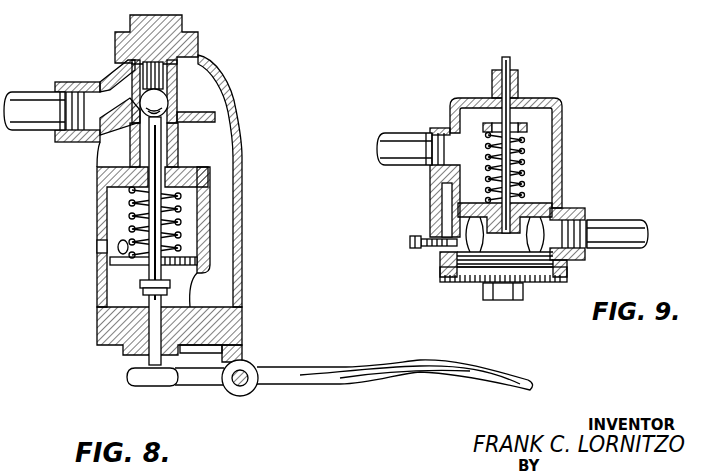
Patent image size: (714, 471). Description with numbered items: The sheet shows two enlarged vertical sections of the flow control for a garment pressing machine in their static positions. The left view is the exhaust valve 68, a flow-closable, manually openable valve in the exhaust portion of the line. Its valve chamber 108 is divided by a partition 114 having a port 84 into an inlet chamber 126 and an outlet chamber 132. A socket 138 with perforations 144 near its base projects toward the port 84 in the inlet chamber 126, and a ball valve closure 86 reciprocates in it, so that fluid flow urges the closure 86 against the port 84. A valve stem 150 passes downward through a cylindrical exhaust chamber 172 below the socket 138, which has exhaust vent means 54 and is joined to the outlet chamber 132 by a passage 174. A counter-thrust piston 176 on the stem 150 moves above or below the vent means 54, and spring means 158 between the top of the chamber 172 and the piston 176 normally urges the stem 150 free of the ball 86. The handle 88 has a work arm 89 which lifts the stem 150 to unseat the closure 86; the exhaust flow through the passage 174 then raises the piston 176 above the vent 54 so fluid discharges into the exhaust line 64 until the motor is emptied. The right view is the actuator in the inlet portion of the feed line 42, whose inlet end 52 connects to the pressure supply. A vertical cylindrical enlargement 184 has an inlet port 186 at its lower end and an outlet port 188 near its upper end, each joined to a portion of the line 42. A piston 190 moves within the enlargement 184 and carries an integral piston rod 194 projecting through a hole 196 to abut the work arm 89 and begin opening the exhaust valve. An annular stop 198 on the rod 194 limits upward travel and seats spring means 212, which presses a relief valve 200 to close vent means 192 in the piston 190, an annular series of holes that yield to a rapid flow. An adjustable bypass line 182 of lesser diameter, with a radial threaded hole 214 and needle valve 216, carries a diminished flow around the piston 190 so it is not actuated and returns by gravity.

In FIG. 9, the feed line 42 is at (385, 135).
In FIG. 9, the inlet end 52 is at (633, 222).
In FIG. 8, the exhaust vent means 54 is at (100, 248).
In FIG. 8, the exhaust line 64 is at (15, 97).
In FIG. 8, the exhaust valve 68 is at (192, 142).
In FIG. 8, the port 84 is at (217, 102).
In FIG. 8, the valve closure 86 is at (205, 82).
In FIG. 8, the handle 88 is at (425, 362).
In FIG. 8, the work arm 89 is at (130, 378).
In FIG. 8, the valve chamber 108 is at (127, 78).
In FIG. 8, the partition 114 is at (100, 85).
In FIG. 8, the inlet chamber 126 is at (120, 117).
In FIG. 8, the outlet chamber 132 is at (233, 108).
In FIG. 8, the socket 138 is at (203, 53).
In FIG. 8, the perforations 144 is at (185, 90).
In FIG. 8, the valve stem 150 is at (153, 155).
In FIG. 8, the spring means 158 is at (128, 203).
In FIG. 8, the exhaust chamber 172 is at (123, 222).
In FIG. 8, the passage 174 is at (227, 168).
In FIG. 8, the counter-thrust piston 176 is at (102, 273).
In FIG. 9, the bypass line 182 is at (447, 255).
In FIG. 9, the cylindrical enlargement 184 is at (562, 112).
In FIG. 9, the inlet port 186 is at (575, 210).
In FIG. 9, the outlet port 188 is at (452, 122).
In FIG. 9, the piston 190 is at (548, 215).
In FIG. 9, the vent means 192 is at (480, 213).
In FIG. 9, the piston rod 194 is at (512, 65).
In FIG. 9, the hole 196 is at (518, 85).
In FIG. 9, the annular stop 198 is at (527, 122).
In FIG. 9, the relief valve 200 is at (487, 250).
In FIG. 9, the spring means 212 is at (523, 157).
In FIG. 9, the threaded hole 214 is at (423, 235).
In FIG. 9, the needle valve 216 is at (412, 246).